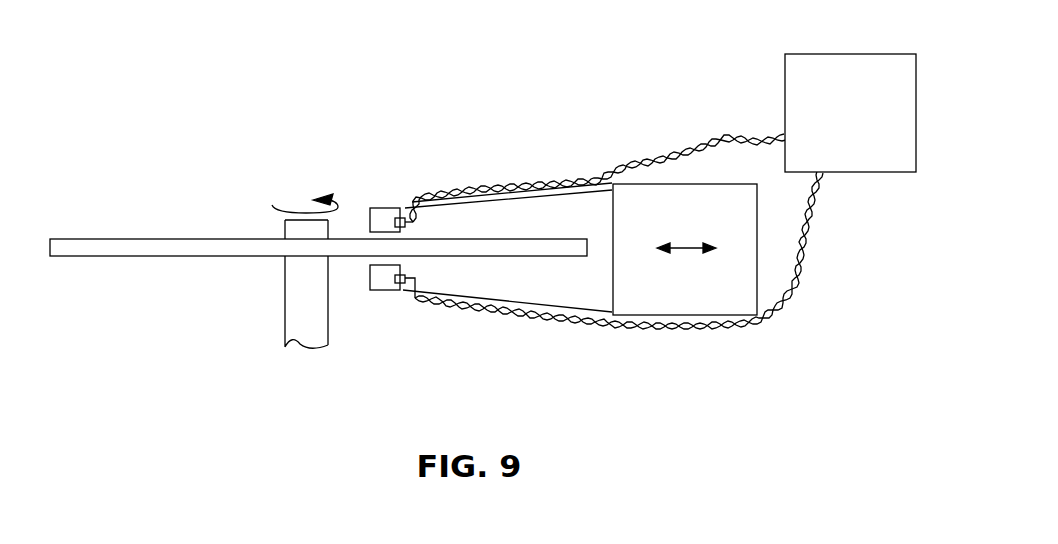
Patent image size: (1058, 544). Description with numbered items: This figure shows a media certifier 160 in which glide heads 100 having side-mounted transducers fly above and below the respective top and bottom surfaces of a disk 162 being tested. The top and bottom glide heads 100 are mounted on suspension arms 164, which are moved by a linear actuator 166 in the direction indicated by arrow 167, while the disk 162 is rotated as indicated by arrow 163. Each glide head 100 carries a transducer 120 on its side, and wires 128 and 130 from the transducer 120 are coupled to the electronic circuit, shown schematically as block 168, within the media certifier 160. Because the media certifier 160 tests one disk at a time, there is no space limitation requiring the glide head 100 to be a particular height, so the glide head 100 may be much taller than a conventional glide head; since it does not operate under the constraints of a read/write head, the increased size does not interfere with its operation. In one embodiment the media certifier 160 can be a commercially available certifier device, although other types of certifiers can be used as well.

The glide head 100 is at (366, 194).
The transducer 120 is at (418, 221).
The wire 128 is at (459, 190).
The wire 130 is at (487, 187).
The media certifier 160 is at (600, 92).
The disk 162 is at (131, 239).
The arrow 163 is at (272, 205).
The suspension arm 164 is at (543, 193).
The linear actuator 166 is at (705, 183).
The arrow 167 is at (688, 246).
The electronic circuit 168 is at (830, 107).